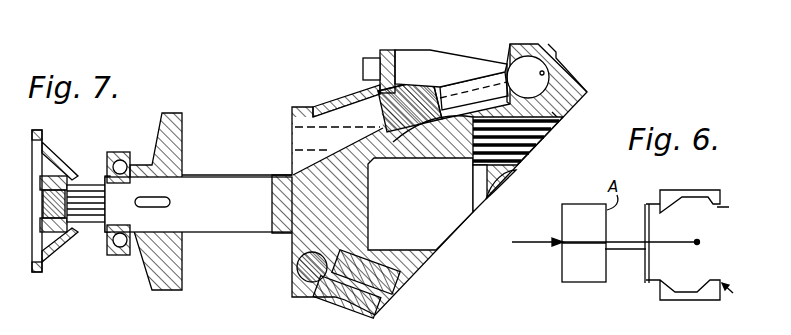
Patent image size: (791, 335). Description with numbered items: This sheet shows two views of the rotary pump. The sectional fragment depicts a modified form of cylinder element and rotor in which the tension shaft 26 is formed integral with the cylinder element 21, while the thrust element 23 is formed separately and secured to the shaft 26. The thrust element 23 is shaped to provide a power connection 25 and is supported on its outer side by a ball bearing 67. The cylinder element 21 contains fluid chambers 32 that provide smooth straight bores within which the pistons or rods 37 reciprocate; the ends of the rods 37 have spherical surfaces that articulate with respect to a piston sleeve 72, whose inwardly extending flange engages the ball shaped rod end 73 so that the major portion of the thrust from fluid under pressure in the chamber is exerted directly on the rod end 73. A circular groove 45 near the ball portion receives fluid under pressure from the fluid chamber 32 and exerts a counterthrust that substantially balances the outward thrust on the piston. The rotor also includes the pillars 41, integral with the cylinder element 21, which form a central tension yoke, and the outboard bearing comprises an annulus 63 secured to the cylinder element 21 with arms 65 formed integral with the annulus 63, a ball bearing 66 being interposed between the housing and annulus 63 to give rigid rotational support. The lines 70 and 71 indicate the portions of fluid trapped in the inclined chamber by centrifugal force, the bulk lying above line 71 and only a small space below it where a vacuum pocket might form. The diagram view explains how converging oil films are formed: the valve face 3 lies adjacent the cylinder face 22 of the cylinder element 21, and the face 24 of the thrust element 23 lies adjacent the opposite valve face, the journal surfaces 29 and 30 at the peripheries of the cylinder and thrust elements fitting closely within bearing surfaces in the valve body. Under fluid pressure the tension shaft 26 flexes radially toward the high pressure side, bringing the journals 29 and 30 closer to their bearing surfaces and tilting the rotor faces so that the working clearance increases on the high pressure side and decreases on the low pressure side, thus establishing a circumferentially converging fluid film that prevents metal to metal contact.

In FIG. 7, the cylinder element 21 is at (385, 50).
In FIG. 7, the arms 65 is at (436, 62).
In FIG. 7, the pistons or rods 37 is at (462, 88).
In FIG. 7, the circular groove 45 is at (542, 63).
In FIG. 7, the annulus 63 is at (580, 88).
In FIG. 7, the ball shaped rod end 73 is at (372, 95).
In FIG. 7, the fluid chamber 32 is at (300, 135).
In FIG. 7, the line 70 is at (337, 138).
In FIG. 7, the line 71 is at (293, 152).
In FIG. 7, the piston sleeve 72 is at (422, 124).
In FIG. 7, the pillars 41 is at (455, 148).
In FIG. 7, the tension shaft 26 is at (227, 222).
In FIG. 7, the power connection 25 is at (92, 212).
In FIG. 6, the power connection 25 is at (521, 246).
In FIG. 7, the ball bearing 67 is at (109, 250).
In FIG. 6, the ball bearing 67 is at (560, 240).
In FIG. 7, the thrust element 23 is at (165, 268).
In FIG. 6, the journal surface 30 is at (600, 205).
In FIG. 6, the face 24 is at (600, 260).
In FIG. 6, the cylinder face 22 is at (649, 259).
In FIG. 6, the journal surface 29 is at (658, 205).
In FIG. 6, the ball bearing 66 is at (735, 294).
In FIG. 6, the valve face 3 is at (643, 213).